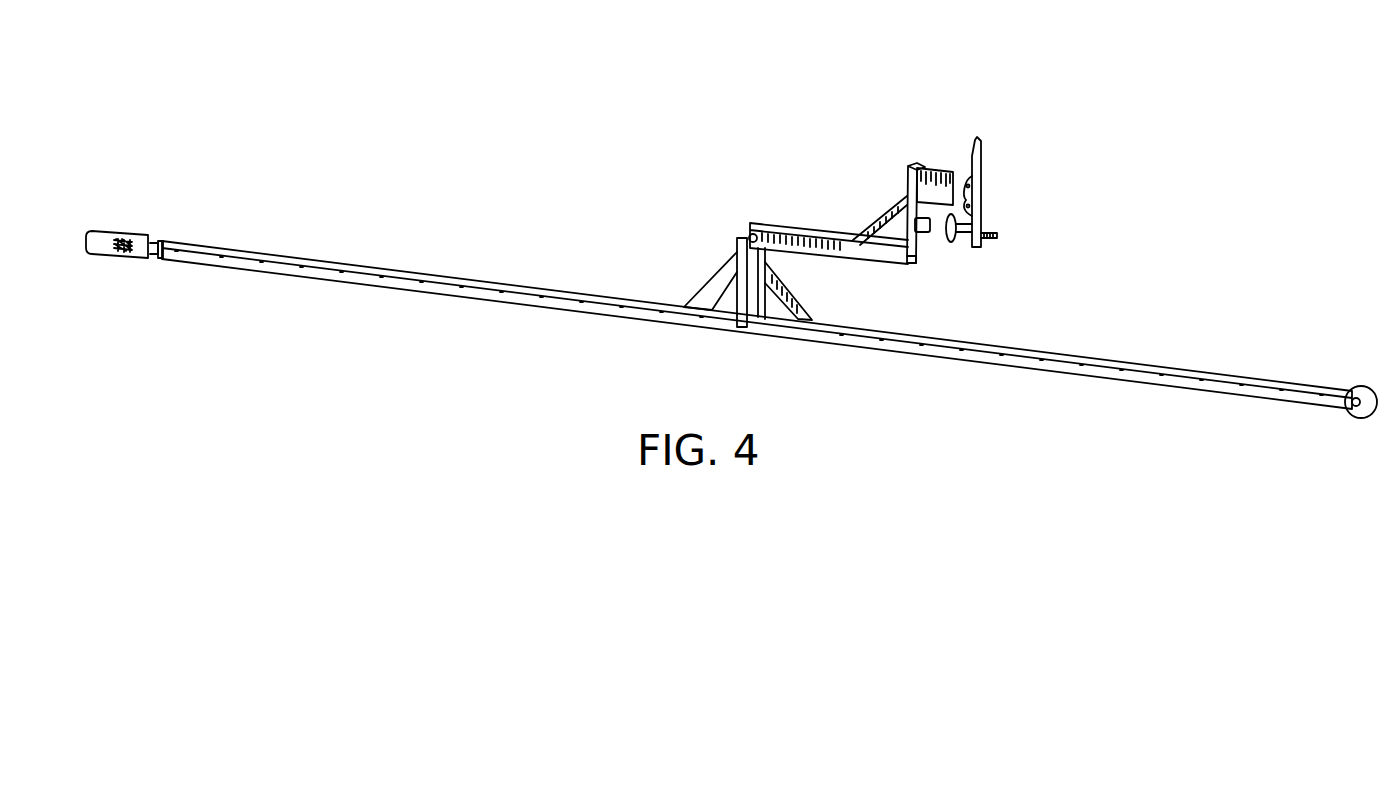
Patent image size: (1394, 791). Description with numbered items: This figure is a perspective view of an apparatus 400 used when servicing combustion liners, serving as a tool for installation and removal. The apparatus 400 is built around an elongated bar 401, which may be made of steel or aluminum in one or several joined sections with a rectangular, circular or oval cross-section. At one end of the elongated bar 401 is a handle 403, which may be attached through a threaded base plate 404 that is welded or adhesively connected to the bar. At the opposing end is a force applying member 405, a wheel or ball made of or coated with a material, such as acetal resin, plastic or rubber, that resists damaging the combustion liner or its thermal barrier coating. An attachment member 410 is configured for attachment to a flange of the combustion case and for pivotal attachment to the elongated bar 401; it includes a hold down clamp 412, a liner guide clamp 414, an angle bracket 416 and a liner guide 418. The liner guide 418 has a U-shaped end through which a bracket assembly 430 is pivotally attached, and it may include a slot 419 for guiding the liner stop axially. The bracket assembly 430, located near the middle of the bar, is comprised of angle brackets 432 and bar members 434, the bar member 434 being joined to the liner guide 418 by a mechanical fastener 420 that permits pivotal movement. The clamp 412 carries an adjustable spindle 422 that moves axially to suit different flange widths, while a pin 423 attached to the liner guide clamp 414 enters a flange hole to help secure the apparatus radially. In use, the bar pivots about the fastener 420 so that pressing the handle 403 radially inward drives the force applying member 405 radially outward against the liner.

The apparatus 400 is at (536, 108).
The elongated bar 401 is at (465, 289).
The handle 403 is at (107, 248).
The threaded base plate 404 is at (161, 240).
The force applying member 405 is at (1360, 392).
The attachment member 410 is at (954, 120).
The clamp 412 is at (981, 179).
The liner guide clamp 414 is at (907, 168).
The angle bracket 416 is at (876, 220).
The liner guide 418 is at (814, 231).
The slot 419 is at (913, 265).
The mechanical fastener 420 is at (751, 234).
The adjustable spindle 422 is at (1000, 237).
The pin 423 is at (928, 233).
The bracket assembly 430 is at (800, 283).
The angle bracket 432 is at (714, 291).
The bar member 434 is at (736, 254).